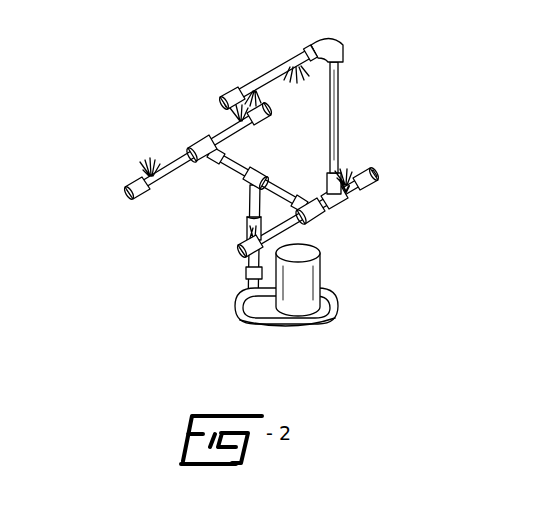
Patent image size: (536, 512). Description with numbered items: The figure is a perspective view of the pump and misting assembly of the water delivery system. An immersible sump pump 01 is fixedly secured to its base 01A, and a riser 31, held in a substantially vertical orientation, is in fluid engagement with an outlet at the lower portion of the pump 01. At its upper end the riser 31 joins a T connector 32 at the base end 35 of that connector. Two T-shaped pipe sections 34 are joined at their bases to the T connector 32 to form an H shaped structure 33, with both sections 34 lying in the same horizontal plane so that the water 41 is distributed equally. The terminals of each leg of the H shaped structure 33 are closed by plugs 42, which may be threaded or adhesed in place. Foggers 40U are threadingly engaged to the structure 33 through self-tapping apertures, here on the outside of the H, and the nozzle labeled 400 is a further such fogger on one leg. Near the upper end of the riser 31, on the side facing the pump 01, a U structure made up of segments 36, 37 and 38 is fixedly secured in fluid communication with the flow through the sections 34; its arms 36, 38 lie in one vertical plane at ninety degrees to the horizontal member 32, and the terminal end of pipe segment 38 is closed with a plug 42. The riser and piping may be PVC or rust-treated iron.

The pipe segment 38 is at (279, 68).
The segment 37 is at (341, 110).
The plug 42 is at (215, 101).
The spray nozzle 400 is at (135, 176).
The H shaped structure 33 is at (170, 175).
The T-shaped pipe section 34 is at (209, 167).
The T connector 32 is at (257, 171).
The segment 36 is at (304, 198).
The base end of T connector 35 is at (247, 200).
The water 41 is at (348, 183).
The fogger 40U is at (366, 188).
The immersible sump pump 01 is at (311, 254).
The riser 31 is at (243, 281).
The base 01A is at (258, 328).